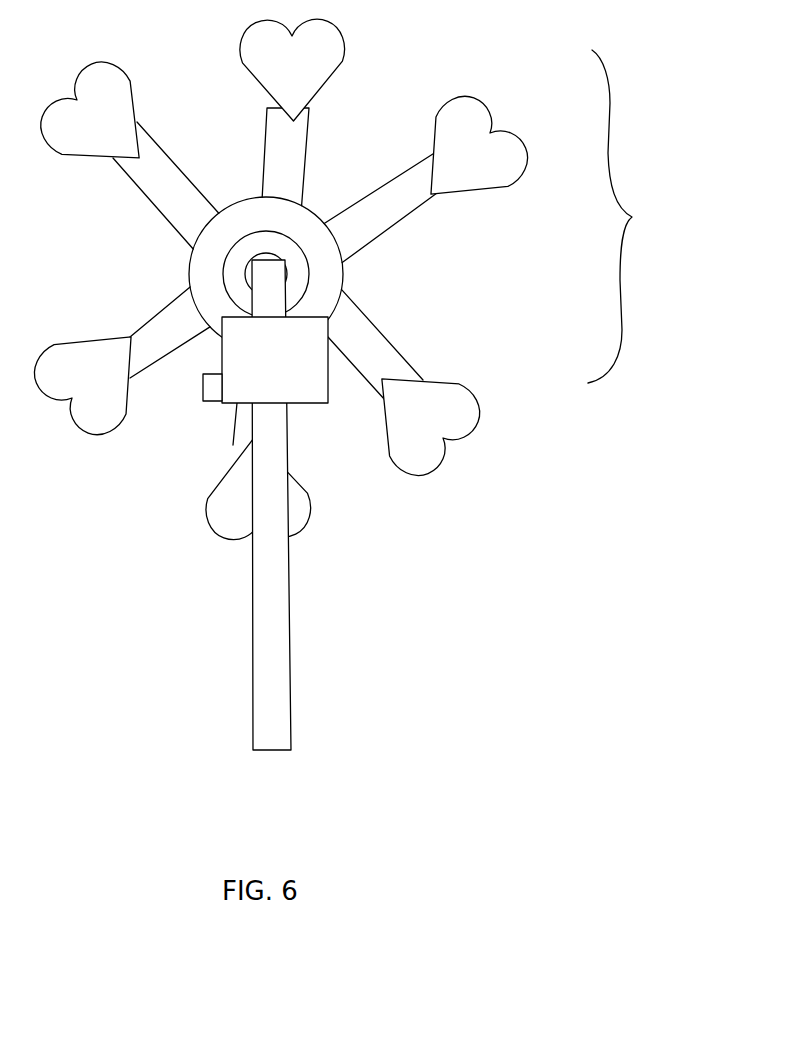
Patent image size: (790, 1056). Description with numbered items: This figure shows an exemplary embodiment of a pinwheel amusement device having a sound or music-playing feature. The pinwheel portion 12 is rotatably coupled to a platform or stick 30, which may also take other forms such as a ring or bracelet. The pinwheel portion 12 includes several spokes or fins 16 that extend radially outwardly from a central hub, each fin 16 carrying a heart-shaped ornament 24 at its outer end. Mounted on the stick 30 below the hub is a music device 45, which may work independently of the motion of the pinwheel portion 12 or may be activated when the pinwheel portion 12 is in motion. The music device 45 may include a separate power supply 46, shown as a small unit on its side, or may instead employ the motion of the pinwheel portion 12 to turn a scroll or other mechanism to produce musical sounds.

The pinwheel portion 12 is at (632, 217).
The spokes or fins 16 is at (168, 157).
The heart-shaped ornament 24 is at (123, 70).
The platform or stick 30 is at (290, 568).
The music device 45 is at (318, 403).
The power supply 46 is at (203, 388).